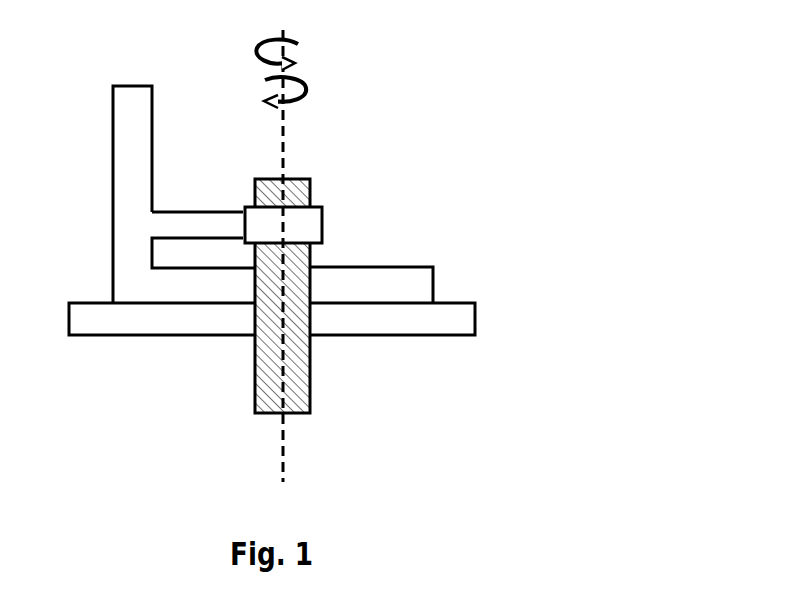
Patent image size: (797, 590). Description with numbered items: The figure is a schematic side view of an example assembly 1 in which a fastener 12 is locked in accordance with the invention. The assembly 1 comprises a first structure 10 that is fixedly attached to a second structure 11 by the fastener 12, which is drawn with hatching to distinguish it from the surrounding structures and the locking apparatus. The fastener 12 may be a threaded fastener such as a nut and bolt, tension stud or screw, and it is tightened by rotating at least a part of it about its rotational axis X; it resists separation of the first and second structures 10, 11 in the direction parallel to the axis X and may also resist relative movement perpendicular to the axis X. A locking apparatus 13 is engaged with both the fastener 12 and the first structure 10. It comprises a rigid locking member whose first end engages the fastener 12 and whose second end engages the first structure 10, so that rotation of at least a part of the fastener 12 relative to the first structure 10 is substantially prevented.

The assembly 1 is at (420, 96).
The first structure 10 is at (125, 157).
The second structure 11 is at (113, 323).
The fastener 12 is at (310, 375).
The locking apparatus 13 is at (211, 223).
The rotational axis X is at (280, 453).